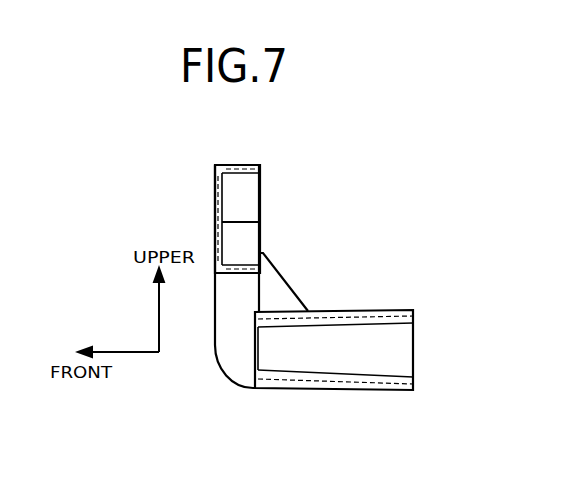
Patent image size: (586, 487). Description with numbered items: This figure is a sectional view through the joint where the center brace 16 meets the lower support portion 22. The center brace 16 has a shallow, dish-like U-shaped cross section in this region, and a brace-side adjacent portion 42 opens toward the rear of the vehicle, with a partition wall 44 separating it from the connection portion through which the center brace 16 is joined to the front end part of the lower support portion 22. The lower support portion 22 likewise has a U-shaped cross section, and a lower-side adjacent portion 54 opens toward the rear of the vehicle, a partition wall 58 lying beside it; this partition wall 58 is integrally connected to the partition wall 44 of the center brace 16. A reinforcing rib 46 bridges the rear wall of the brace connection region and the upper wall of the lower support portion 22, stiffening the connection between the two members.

The center brace 16 is at (238, 242).
The lower support portion 22 is at (314, 364).
The brace-side adjacent portion 42 is at (236, 165).
The partition wall 44 is at (247, 238).
The reinforcing rib 46 is at (281, 298).
The lower-side adjacent portion 54 is at (357, 313).
The partition wall 58 is at (332, 360).